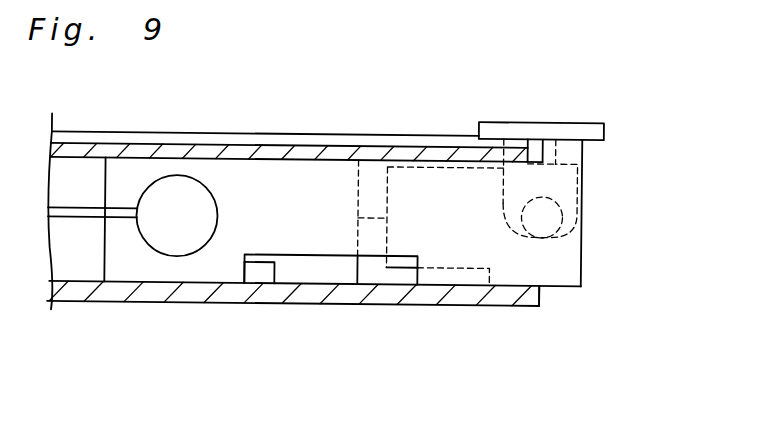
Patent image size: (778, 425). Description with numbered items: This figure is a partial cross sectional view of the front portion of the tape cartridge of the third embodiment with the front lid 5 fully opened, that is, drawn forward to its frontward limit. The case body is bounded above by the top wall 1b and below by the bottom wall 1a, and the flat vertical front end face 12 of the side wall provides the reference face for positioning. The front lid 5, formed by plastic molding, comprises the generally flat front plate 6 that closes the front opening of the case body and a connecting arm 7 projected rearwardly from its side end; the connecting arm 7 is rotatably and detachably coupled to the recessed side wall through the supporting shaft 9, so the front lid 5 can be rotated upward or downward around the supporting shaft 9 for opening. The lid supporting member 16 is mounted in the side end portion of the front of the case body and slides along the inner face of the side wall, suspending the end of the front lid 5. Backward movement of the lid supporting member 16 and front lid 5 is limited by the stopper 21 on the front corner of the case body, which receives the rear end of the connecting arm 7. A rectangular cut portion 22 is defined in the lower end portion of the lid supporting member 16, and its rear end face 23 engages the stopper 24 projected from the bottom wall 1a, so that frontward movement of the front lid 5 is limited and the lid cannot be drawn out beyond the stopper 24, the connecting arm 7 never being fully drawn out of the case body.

The bottom wall 1a is at (305, 297).
The top wall 1b is at (270, 158).
The front lid 5 is at (573, 123).
The front plate 6 is at (503, 140).
The connecting arm 7 is at (568, 175).
The supporting shaft 9 is at (547, 222).
The front end face 12 is at (549, 150).
The lid supporting member 16 is at (105, 253).
The stopper 21 is at (362, 267).
The cut portion 22 is at (312, 267).
The rear end face 23 is at (245, 272).
The stopper 24 is at (265, 272).